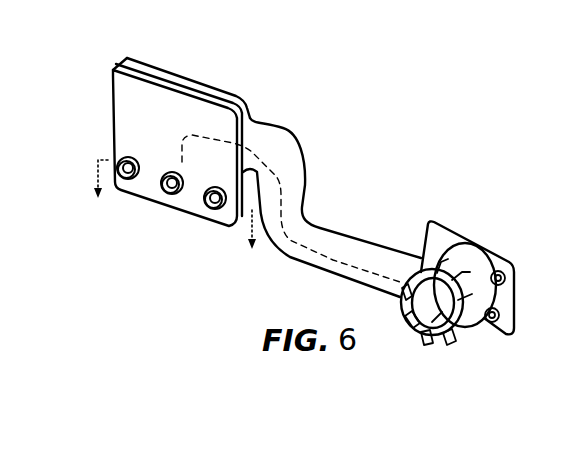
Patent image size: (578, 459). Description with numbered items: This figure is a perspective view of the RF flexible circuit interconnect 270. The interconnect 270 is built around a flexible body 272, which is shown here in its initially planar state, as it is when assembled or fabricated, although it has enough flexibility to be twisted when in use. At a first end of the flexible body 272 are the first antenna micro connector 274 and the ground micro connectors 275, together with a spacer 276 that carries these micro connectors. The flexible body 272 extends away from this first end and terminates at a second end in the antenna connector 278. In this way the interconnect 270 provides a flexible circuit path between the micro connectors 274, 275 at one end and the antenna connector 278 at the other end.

The interconnect 270 is at (422, 141).
The flexible body 272 is at (273, 128).
The first antenna micro connector 274 is at (172, 195).
The ground micro connectors 275 is at (125, 180).
The spacer 276 is at (145, 99).
The antenna connector 278 is at (463, 327).